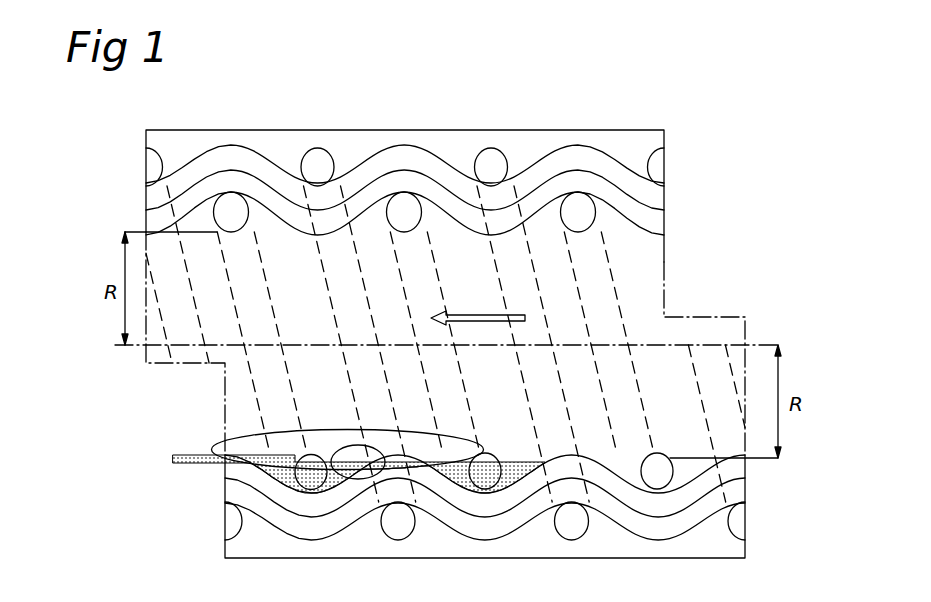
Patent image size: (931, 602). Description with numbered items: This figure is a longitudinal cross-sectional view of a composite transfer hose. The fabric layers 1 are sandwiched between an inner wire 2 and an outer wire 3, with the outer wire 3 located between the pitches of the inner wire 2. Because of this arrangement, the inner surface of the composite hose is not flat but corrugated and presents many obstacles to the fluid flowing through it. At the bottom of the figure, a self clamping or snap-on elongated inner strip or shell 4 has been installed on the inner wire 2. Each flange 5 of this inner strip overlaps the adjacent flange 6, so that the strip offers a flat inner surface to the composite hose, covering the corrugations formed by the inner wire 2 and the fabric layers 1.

The fabric layers 1 is at (405, 153).
The inner wire 2 is at (594, 212).
The outer wire 3 is at (320, 157).
The inner strip or shell 4 is at (277, 480).
The flange 5 is at (190, 455).
The adjacent flange 6 is at (338, 488).